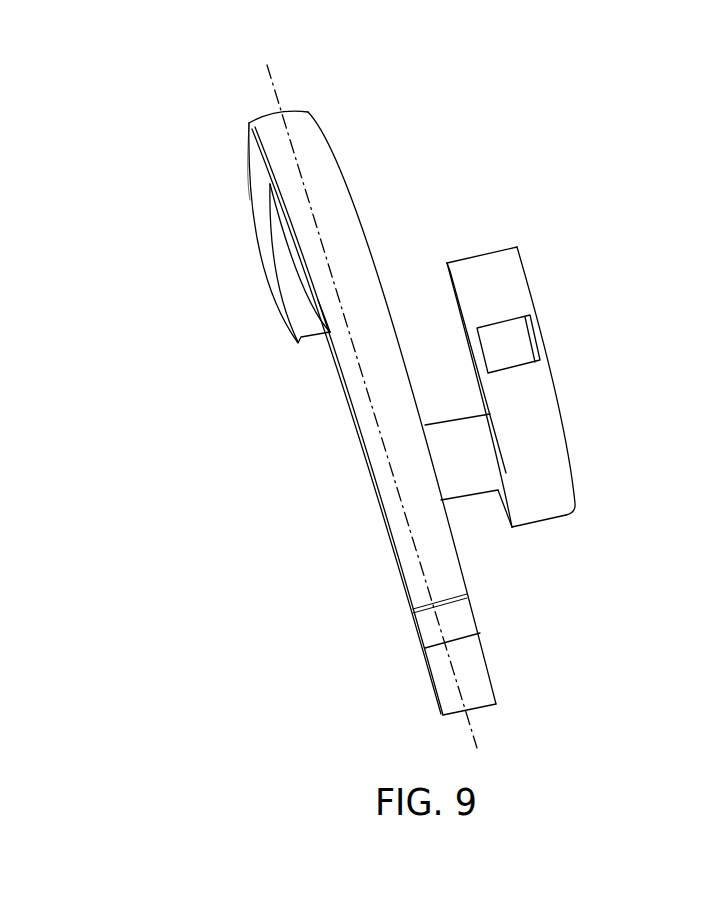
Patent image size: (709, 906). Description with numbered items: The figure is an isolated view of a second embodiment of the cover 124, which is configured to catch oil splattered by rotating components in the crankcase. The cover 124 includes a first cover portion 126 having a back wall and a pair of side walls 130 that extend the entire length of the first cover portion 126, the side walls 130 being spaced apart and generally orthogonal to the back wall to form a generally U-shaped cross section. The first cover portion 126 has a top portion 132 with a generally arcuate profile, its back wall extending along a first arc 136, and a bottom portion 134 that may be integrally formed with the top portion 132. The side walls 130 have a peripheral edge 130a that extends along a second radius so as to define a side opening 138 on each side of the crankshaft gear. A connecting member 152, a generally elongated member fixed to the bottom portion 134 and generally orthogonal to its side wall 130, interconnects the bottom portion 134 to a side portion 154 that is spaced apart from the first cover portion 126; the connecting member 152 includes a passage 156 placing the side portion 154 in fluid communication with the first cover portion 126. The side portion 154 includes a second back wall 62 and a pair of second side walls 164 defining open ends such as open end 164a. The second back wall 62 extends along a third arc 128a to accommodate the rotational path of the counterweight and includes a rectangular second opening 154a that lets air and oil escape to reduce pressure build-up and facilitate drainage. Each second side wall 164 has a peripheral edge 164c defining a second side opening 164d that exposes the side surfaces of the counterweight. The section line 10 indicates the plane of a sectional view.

The section line 10- 10 is at (267, 65).
The second back wall 62 is at (574, 498).
The cover 124 is at (539, 111).
The first cover portion 126 is at (323, 108).
The third arc 128a is at (347, 184).
The side walls 130 is at (251, 170).
The peripheral edge 130a is at (337, 361).
The top portion 132 is at (240, 200).
The bottom portion 134 is at (399, 655).
The first arc 136 is at (366, 238).
The side opening 138 is at (235, 449).
The connecting member 152 is at (488, 501).
The side portion 154 is at (559, 387).
The second opening 154a is at (538, 344).
The passage 156 is at (506, 471).
The second side walls 164 is at (532, 296).
The open end 164a is at (480, 256).
The peripheral edge 164c is at (461, 318).
The second side opening 164d is at (368, 436).